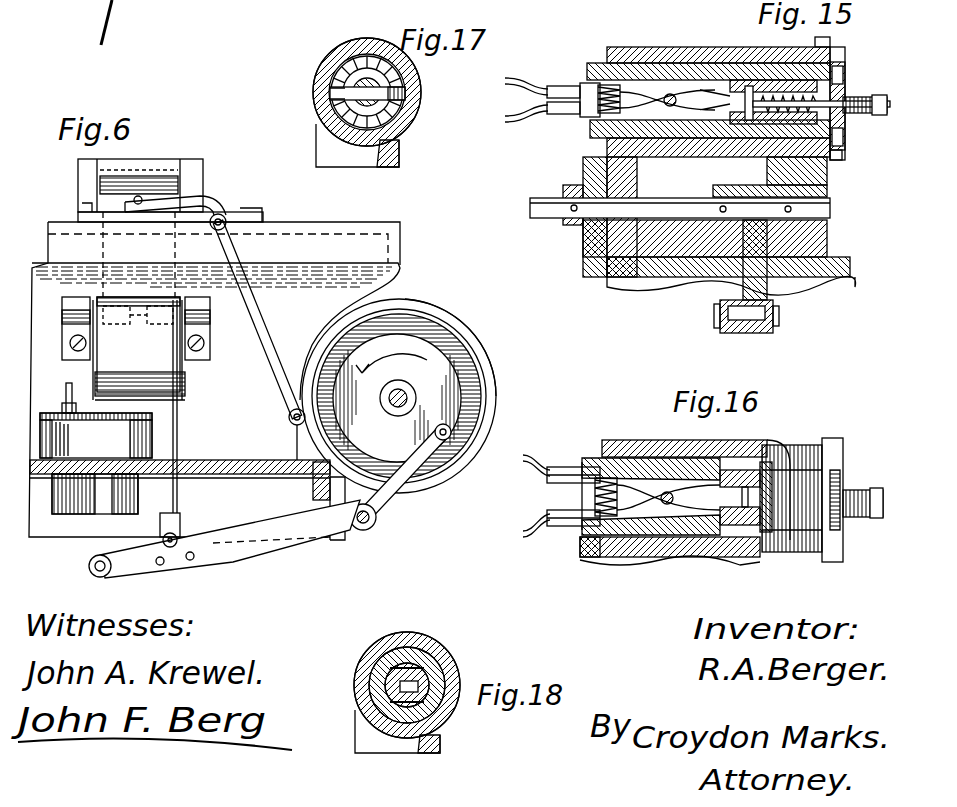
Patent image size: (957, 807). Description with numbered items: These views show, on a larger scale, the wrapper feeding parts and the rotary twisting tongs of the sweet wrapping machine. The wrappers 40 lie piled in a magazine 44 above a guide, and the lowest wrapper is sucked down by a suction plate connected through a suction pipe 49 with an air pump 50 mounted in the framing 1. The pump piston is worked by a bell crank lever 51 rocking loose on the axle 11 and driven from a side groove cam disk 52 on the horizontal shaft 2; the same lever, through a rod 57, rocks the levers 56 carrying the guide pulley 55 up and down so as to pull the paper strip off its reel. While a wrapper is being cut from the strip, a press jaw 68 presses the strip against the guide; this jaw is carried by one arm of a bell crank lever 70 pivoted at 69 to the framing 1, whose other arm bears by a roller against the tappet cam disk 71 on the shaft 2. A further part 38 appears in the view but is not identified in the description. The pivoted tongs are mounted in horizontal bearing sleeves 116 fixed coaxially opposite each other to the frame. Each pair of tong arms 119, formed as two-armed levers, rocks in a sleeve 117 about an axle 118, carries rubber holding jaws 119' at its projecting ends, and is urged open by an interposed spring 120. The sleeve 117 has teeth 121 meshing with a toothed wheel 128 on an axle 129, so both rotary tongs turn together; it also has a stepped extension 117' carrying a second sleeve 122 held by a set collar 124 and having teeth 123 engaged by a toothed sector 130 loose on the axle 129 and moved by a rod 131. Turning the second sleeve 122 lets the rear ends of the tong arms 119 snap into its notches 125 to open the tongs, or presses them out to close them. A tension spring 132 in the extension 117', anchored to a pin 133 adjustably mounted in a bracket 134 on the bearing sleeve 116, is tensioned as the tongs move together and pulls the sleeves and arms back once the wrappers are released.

In FIG. 15, the framing 1 is at (667, 268).
In FIG. 6, the horizontal shaft 2 is at (410, 395).
In FIG. 6, the axle 11 is at (377, 520).
In FIG. 6, the rod 38 is at (183, 22).
In FIG. 6, the wrapper 40 is at (185, 176).
In FIG. 6, the magazine 44 is at (163, 172).
In FIG. 6, the suction pipe 49 is at (56, 395).
In FIG. 6, the air pump 50 is at (96, 463).
In FIG. 6, the bell crank lever 51 is at (229, 552).
In FIG. 6, the side groove cam disk 52 is at (472, 362).
In FIG. 6, the guide pulley 55 is at (152, 397).
In FIG. 6, the levers 56 is at (175, 355).
In FIG. 6, the rod 57 is at (180, 440).
In FIG. 6, the press jaw 68 is at (128, 210).
In FIG. 6, the pivot 69 is at (232, 219).
In FIG. 6, the bell crank lever 70 is at (222, 204).
In FIG. 6, the cam disk 71 is at (392, 305).
In FIG. 17, the bearing sleeve 116 is at (330, 66).
In FIG. 15, the bearing sleeve 116 is at (735, 58).
In FIG. 16, the bearing sleeve 116 is at (822, 453).
In FIG. 18, the bearing sleeve 116 is at (392, 737).
In FIG. 15, the sleeve 117 is at (708, 63).
In FIG. 16, the sleeve 117 is at (651, 472).
In FIG. 15, the stepped extension 117' is at (710, 80).
In FIG. 16, the stepped extension 117' is at (713, 556).
In FIG. 18, the stepped extension 117' is at (448, 711).
In FIG. 17, the axle 118 is at (350, 107).
In FIG. 15, the axle 118 is at (664, 94).
In FIG. 16, the axle 118 is at (667, 506).
In FIG. 17, the tong arms 119 is at (364, 113).
In FIG. 15, the tong arms 119 is at (573, 114).
In FIG. 16, the tong arms 119 is at (566, 496).
In FIG. 18, the tong arms 119 is at (368, 660).
In FIG. 15, the rubber holding jaws 119' is at (531, 108).
In FIG. 16, the rubber holding jaws 119' is at (535, 496).
In FIG. 15, the spring 120 is at (608, 87).
In FIG. 16, the spring 120 is at (603, 478).
In FIG. 15, the teeth 121 is at (643, 138).
In FIG. 16, the teeth 121 is at (630, 557).
In FIG. 15, the second sleeve 122 is at (822, 50).
In FIG. 16, the second sleeve 122 is at (762, 550).
In FIG. 18, the second sleeve 122 is at (417, 663).
In FIG. 17, the teeth 123 is at (358, 62).
In FIG. 15, the teeth 123 is at (820, 160).
In FIG. 16, the teeth 123 is at (770, 480).
In FIG. 15, the set collar 124 is at (805, 98).
In FIG. 16, the notches 125 is at (733, 470).
In FIG. 18, the notches 125 is at (393, 687).
In FIG. 15, the toothed wheel 128 is at (587, 240).
In FIG. 16, the toothed wheel 128 is at (582, 555).
In FIG. 15, the axle 129 is at (535, 207).
In FIG. 15, the toothed sector 130 is at (747, 174).
In FIG. 15, the rod 131 is at (740, 330).
In FIG. 15, the tension spring 132 is at (827, 197).
In FIG. 16, the tension spring 132 is at (742, 497).
In FIG. 15, the pin 133 is at (830, 118).
In FIG. 16, the pin 133 is at (878, 520).
In FIG. 15, the bracket 134 is at (838, 158).
In FIG. 16, the bracket 134 is at (836, 470).